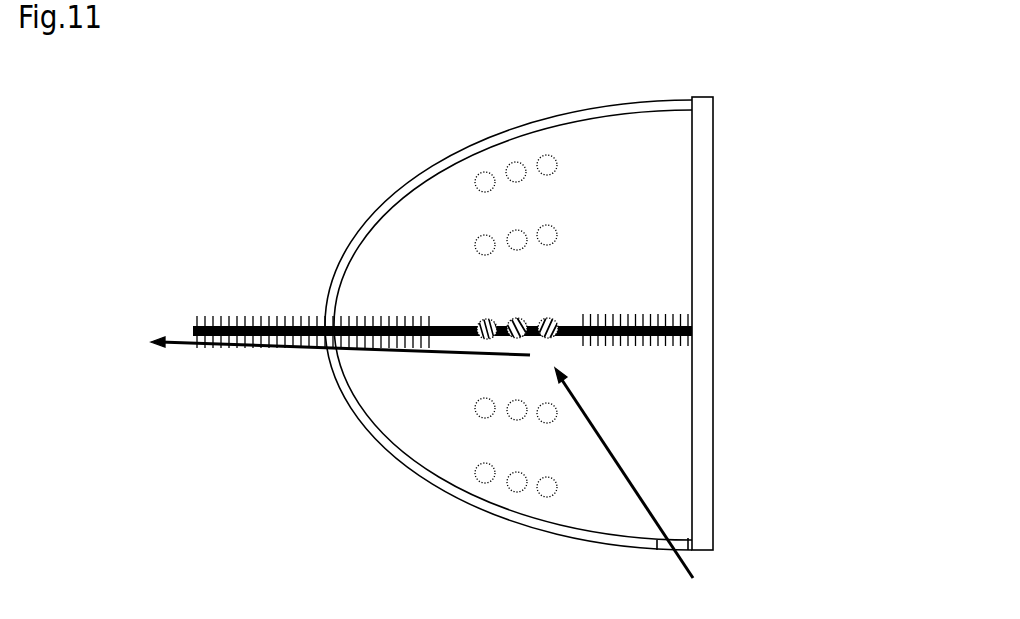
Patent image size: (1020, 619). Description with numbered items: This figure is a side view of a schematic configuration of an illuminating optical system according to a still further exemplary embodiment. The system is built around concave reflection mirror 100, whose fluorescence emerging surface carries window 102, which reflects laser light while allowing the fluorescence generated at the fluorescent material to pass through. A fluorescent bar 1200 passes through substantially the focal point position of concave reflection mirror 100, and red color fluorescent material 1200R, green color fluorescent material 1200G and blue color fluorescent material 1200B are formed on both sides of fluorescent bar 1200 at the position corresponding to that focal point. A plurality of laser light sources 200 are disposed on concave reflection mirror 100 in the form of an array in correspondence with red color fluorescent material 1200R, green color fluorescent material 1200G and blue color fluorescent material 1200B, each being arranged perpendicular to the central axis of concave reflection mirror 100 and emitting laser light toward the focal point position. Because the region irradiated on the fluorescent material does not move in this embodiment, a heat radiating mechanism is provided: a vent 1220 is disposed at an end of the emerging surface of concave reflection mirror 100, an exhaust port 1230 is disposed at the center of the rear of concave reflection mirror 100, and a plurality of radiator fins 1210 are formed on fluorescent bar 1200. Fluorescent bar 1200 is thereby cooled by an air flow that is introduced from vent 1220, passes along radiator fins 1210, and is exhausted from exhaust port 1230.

The concave reflection mirror 100 is at (528, 126).
The window 102 is at (704, 178).
The laser light sources 200 is at (540, 157).
The fluorescent bar 1200 is at (193, 332).
The radiator fins 1210 is at (236, 314).
The vent 1220 is at (667, 551).
The exhaust port 1230 is at (322, 320).
The red color fluorescent material 1200R is at (485, 320).
The green color fluorescent material 1200G is at (514, 320).
The blue color fluorescent material 1200B is at (551, 338).